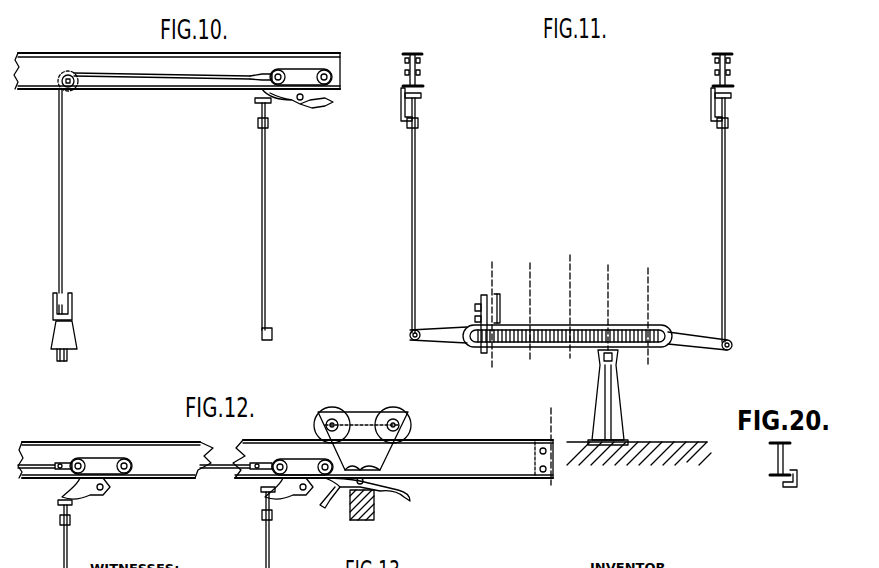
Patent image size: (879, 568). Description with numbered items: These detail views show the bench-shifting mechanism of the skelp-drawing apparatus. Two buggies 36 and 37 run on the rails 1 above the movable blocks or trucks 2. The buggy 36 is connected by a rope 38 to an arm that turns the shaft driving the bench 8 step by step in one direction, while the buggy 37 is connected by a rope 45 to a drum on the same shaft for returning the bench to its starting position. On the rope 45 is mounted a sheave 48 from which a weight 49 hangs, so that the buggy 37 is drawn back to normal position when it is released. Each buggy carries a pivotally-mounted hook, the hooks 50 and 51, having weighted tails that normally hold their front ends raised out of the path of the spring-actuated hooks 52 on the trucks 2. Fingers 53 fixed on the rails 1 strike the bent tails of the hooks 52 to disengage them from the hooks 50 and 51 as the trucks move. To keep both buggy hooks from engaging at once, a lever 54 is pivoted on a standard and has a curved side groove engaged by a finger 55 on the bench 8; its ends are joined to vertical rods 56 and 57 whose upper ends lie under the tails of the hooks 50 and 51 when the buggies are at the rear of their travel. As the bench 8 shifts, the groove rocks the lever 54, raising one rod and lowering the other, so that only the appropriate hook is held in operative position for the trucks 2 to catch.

In FIG. 10, the rails 1 is at (116, 53).
In FIG. 11, the rails 1 is at (418, 54).
In FIG. 12, the rails 1 is at (140, 442).
In FIG. 20, the rails 1 is at (771, 457).
In FIG. 12, the movable blocks or trucks 2 is at (362, 438).
In FIG. 11, the bench 8 is at (501, 308).
In FIG. 12, the buggy 36 is at (95, 460).
In FIG. 10, the buggy 37 is at (302, 68).
In FIG. 12, the rope 38 is at (37, 462).
In FIG. 10, the rope 45 is at (173, 80).
In FIG. 10, the sheave 48 is at (64, 291).
In FIG. 10, the weight 49 is at (77, 339).
In FIG. 12, the hook 50 is at (88, 500).
In FIG. 10, the hook 51 is at (310, 107).
In FIG. 12, the spring-actuated hook 52 is at (380, 488).
In FIG. 12, the finger 53 is at (540, 479).
In FIG. 20, the finger 53 is at (787, 492).
In FIG. 11, the lever 54 is at (556, 347).
In FIG. 11, the finger 55 is at (478, 308).
In FIG. 11, the vertical rod 56 is at (418, 207).
In FIG. 12, the vertical rod 56 is at (70, 545).
In FIG. 10, the vertical rod 57 is at (266, 229).
In FIG. 11, the vertical rod 57 is at (721, 176).